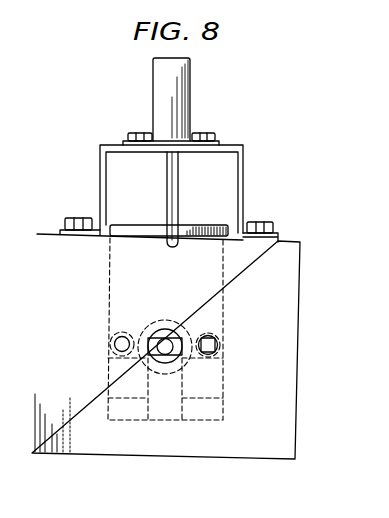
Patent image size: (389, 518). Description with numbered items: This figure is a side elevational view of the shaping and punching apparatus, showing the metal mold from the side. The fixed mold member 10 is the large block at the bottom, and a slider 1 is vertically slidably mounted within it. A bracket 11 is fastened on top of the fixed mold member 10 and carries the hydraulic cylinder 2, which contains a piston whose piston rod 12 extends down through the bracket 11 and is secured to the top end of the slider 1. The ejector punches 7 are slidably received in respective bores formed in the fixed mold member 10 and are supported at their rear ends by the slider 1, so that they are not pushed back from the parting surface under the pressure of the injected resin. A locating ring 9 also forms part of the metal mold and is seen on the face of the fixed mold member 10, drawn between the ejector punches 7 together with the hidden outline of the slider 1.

The slider 1 is at (125, 230).
The hydraulic cylinder 2 is at (182, 85).
The ejector punches 7 is at (120, 344).
The locating ring 9 is at (166, 368).
The fixed mold member 10 is at (283, 262).
The bracket 11 is at (242, 190).
The piston rod 12 is at (173, 188).